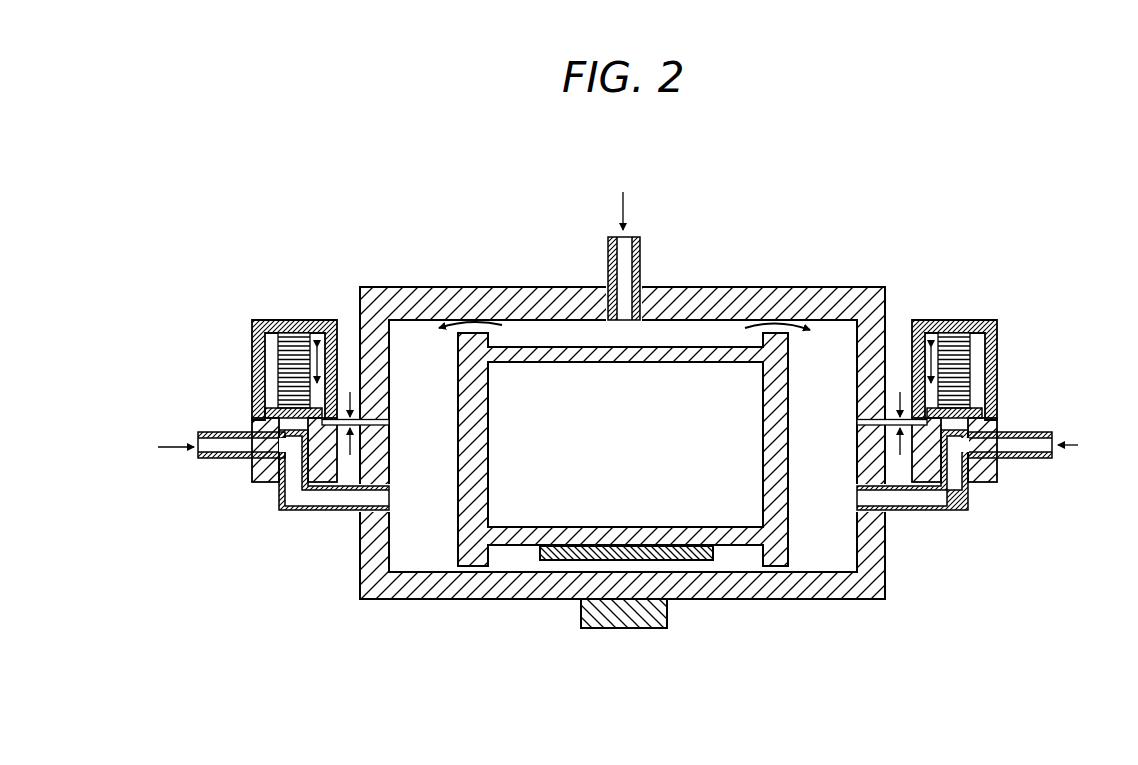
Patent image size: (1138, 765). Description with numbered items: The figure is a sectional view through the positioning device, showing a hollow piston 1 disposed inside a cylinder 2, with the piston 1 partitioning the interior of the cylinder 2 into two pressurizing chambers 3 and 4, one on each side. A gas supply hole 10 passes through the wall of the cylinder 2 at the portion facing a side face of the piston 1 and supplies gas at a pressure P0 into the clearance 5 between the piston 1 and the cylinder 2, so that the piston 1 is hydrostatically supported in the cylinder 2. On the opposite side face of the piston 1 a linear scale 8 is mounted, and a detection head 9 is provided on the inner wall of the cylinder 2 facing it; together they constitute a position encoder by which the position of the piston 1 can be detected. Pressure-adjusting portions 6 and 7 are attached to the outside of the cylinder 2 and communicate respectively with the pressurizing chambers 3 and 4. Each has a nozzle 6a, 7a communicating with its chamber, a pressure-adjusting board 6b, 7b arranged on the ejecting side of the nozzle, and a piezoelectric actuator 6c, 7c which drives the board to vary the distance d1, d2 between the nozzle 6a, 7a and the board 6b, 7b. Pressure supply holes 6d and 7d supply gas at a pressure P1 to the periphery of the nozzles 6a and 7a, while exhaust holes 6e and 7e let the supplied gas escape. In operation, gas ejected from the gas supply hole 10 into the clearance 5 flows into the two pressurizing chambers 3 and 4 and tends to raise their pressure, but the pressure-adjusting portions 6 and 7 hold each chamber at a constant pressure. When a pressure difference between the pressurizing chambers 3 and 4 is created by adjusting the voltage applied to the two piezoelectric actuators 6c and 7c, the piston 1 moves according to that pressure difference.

The piston 1 is at (725, 357).
The cylinder 2 is at (797, 300).
The pressurizing chamber 3 is at (413, 340).
The pressurizing chamber 4 is at (833, 330).
The clearance 5 is at (532, 335).
The pressure-adjusting portion 6 is at (282, 387).
The nozzle 6a is at (295, 483).
The pressure-adjusting board 6b is at (262, 410).
The piezoelectric actuator 6c is at (267, 322).
The pressure supply hole 6d is at (215, 448).
The exhaust hole 6e is at (273, 397).
The pressure-adjusting portion 7 is at (967, 402).
The nozzle 7a is at (952, 480).
The pressure-adjusting board 7b is at (982, 412).
The piezoelectric actuator 7c is at (950, 322).
The pressure supply hole 7d is at (1037, 455).
The exhaust hole 7e is at (975, 397).
The linear scale 8 is at (703, 560).
The detection head 9 is at (600, 615).
The gas supply hole 10 is at (624, 260).
The distance d1 is at (342, 423).
The distance d2 is at (890, 423).
The gas supply pressure P0 is at (626, 195).
The supply pressure P1 is at (626, 445).